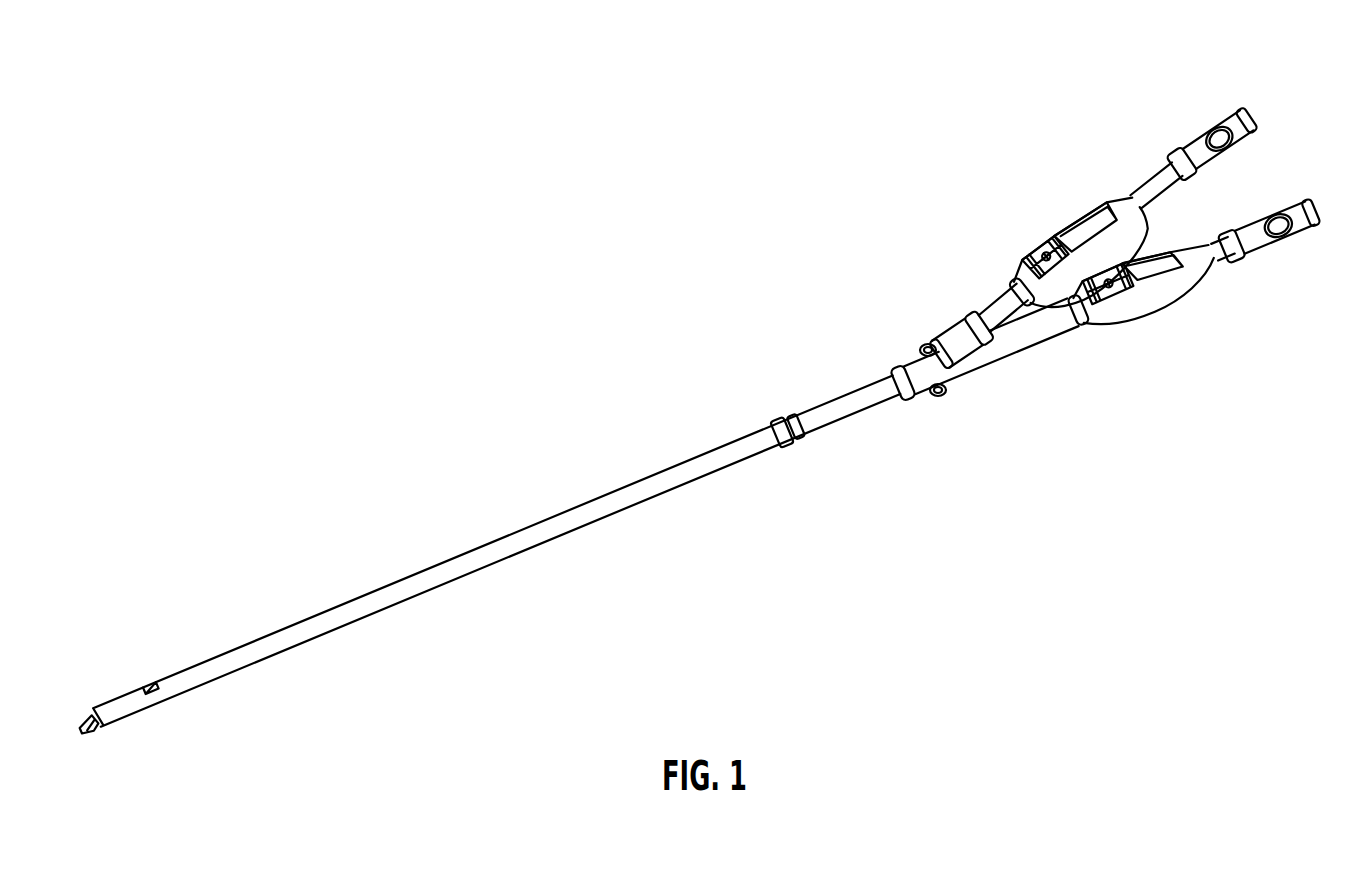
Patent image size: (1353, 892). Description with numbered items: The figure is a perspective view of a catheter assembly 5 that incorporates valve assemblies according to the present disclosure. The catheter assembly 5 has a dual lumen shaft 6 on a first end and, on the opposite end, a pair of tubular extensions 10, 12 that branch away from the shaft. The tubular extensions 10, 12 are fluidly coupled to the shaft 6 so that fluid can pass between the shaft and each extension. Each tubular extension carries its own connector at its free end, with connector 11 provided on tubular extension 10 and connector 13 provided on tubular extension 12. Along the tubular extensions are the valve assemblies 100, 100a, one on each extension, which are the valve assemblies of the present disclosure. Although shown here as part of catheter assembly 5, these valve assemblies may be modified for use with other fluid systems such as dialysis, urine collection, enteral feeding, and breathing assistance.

The catheter assembly 5 is at (524, 329).
The dual lumen shaft 6 is at (437, 594).
The tubular extension 10 is at (1241, 291).
The connector 11 is at (1279, 253).
The tubular extension 12 is at (1109, 161).
The connector 13 is at (1199, 140).
The valve assembly 100 is at (1036, 232).
The valve assembly 100a is at (1164, 319).